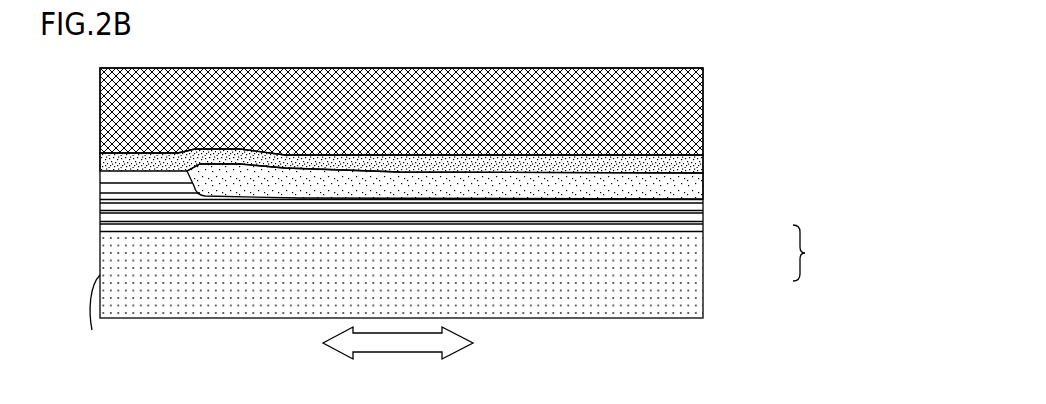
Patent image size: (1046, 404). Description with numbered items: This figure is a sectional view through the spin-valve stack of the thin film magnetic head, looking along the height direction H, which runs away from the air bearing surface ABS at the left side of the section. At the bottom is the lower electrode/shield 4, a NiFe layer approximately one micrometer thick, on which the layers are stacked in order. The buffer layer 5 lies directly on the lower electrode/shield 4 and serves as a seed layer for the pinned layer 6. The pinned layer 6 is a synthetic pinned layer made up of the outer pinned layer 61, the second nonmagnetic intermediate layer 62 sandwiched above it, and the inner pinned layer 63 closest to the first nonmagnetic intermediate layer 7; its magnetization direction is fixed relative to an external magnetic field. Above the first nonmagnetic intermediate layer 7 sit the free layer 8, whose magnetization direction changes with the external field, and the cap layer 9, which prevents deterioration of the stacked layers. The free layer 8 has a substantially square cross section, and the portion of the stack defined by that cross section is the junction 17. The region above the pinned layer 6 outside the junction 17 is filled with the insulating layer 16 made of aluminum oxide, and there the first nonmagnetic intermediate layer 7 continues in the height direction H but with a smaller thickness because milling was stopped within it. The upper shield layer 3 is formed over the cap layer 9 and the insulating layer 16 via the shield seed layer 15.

The upper shield layer 3 is at (703, 123).
The shield seed layer 15 is at (703, 163).
The insulating layer 16 is at (703, 188).
The cap layer 9 is at (100, 173).
The free layer 8 is at (100, 189).
The first nonmagnetic intermediate layer 7 is at (702, 199).
The inner pinned layer 63 is at (702, 207).
The second nonmagnetic intermediate layer 62 is at (702, 213).
The outer pinned layer 61 is at (702, 220).
The pinned layer 6 is at (808, 253).
The buffer layer 5 is at (702, 228).
The lower electrode/shield 4 is at (702, 270).
The junction 17 is at (141, 157).
The air bearing surface ABS is at (104, 315).
The height direction H is at (393, 352).